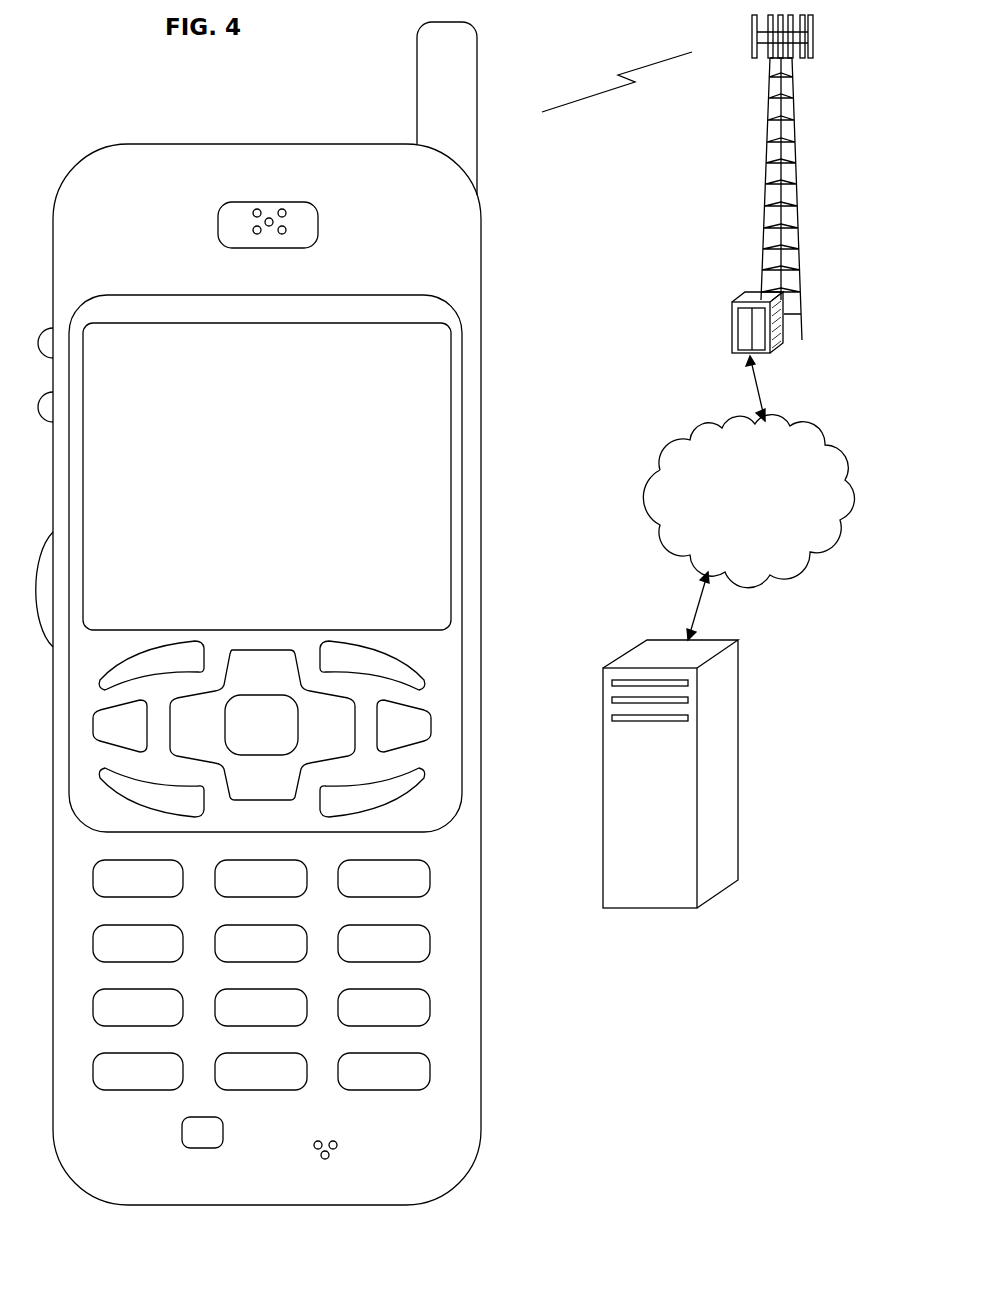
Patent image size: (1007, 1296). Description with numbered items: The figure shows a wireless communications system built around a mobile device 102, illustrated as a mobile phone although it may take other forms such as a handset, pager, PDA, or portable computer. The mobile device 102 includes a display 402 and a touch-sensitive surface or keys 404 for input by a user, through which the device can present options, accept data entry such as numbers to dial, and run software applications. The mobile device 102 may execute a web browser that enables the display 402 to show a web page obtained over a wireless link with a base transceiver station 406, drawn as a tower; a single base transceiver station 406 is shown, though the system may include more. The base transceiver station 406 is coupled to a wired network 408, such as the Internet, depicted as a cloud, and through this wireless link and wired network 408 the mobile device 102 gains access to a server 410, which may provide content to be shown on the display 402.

The mobile device 102 is at (92, 1202).
The display 402 is at (452, 338).
The keys 404 is at (487, 1101).
The base transceiver station 406 is at (763, 198).
The wired network 408 is at (668, 552).
The server 410 is at (643, 912).